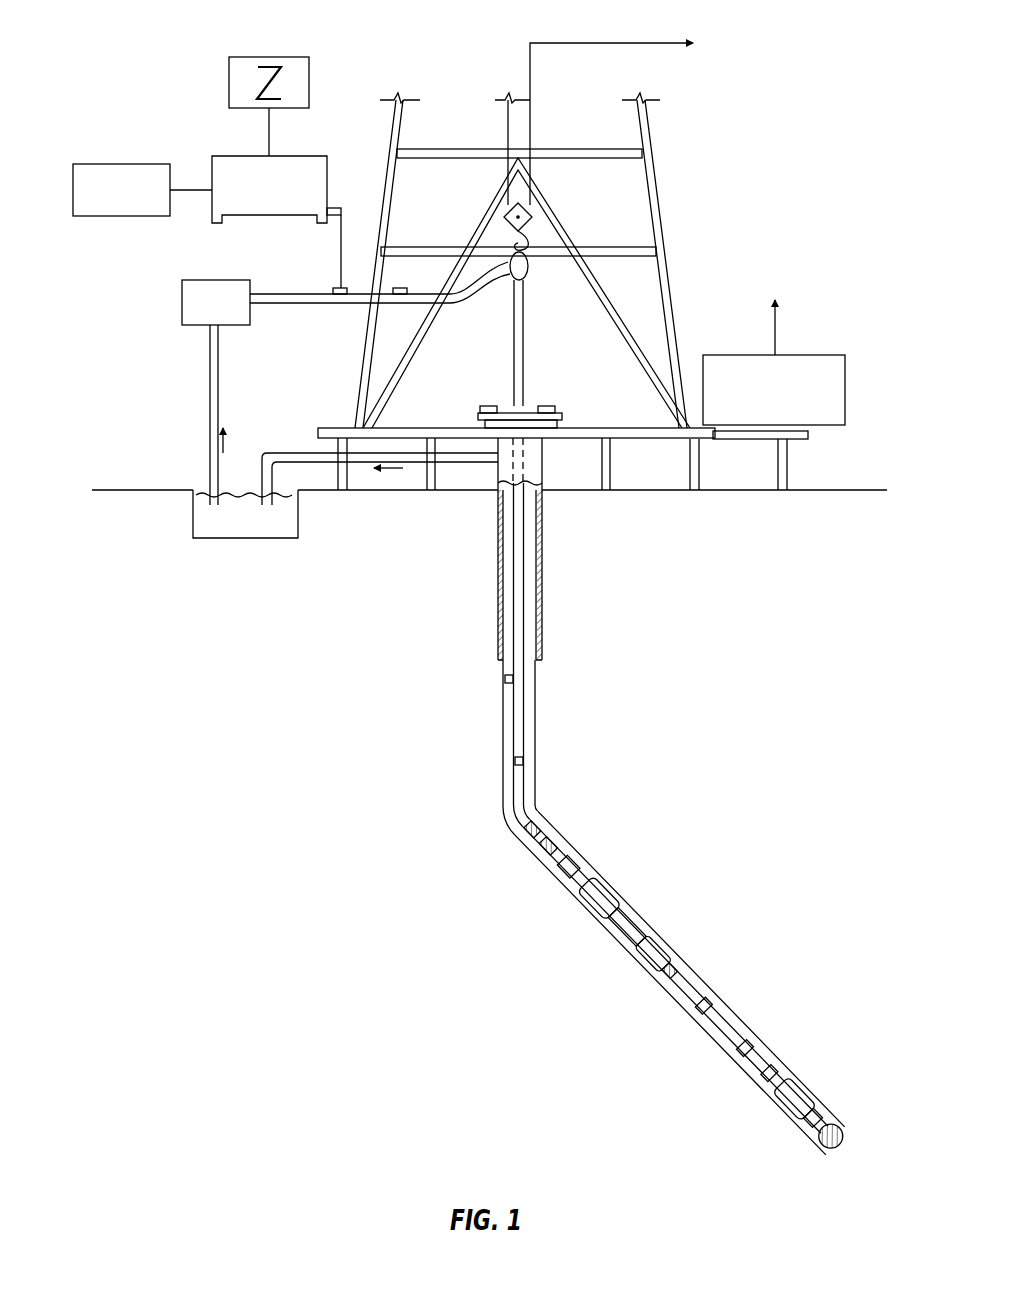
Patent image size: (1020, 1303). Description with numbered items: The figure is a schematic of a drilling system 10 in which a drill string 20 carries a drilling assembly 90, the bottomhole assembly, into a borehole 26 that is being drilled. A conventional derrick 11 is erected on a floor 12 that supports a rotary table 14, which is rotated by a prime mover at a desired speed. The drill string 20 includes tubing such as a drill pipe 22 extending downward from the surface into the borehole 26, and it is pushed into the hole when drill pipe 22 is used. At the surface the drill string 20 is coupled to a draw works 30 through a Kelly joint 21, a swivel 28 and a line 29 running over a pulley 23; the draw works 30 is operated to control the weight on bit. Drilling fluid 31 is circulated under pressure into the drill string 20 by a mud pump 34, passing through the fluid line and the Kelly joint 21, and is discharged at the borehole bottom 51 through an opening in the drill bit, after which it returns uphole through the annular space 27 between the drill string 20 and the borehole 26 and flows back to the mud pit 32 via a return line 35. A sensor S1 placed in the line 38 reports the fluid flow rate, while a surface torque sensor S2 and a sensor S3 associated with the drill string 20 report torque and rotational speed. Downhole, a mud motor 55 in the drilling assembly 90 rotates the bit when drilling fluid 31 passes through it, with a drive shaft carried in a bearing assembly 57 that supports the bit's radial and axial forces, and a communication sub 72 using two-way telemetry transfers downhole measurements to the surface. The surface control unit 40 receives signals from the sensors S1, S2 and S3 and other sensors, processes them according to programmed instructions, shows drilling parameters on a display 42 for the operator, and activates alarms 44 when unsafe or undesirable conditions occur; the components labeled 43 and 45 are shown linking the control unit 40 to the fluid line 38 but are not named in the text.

The drilling system 10 is at (428, 56).
The derrick 11 is at (660, 255).
The floor 12 is at (688, 425).
The rotary table 14 is at (536, 407).
The drill string 20 is at (526, 697).
The Kelly joint 21 is at (524, 336).
The drill pipe 22 is at (512, 724).
The pulley 23 is at (531, 203).
The borehole 26 is at (540, 813).
The annular space 27 is at (553, 843).
The swivel 28 is at (512, 278).
The line 29 is at (531, 121).
The draw works 30 is at (813, 355).
The drilling fluid 31 is at (200, 517).
The mud pit 32 is at (245, 535).
The mud pump 34 is at (197, 280).
The return line 35 is at (462, 463).
The line 38 is at (318, 304).
The surface control unit 40 is at (240, 156).
The display/monitor 42 is at (255, 57).
The sensor 43 is at (340, 288).
The alarms 44 is at (130, 164).
The signal line 45 is at (338, 208).
The borehole bottom 51 is at (818, 1163).
The downhole motor 55 is at (695, 988).
The bearing assembly 57 is at (805, 1088).
The communication sub 72 is at (512, 797).
The drilling assembly 90 is at (770, 890).
The sensor S1 is at (400, 288).
The surface torque sensor S2 is at (547, 406).
The sensor S3 is at (490, 406).